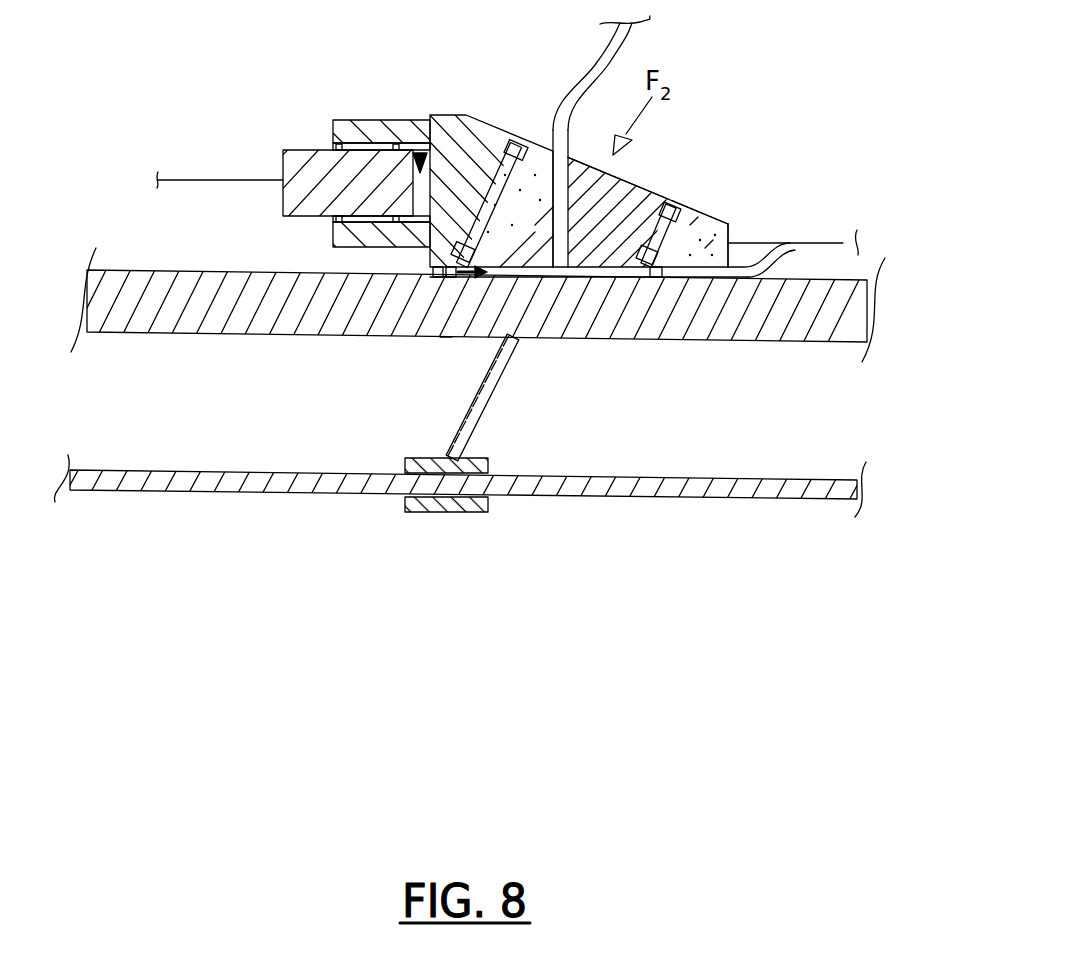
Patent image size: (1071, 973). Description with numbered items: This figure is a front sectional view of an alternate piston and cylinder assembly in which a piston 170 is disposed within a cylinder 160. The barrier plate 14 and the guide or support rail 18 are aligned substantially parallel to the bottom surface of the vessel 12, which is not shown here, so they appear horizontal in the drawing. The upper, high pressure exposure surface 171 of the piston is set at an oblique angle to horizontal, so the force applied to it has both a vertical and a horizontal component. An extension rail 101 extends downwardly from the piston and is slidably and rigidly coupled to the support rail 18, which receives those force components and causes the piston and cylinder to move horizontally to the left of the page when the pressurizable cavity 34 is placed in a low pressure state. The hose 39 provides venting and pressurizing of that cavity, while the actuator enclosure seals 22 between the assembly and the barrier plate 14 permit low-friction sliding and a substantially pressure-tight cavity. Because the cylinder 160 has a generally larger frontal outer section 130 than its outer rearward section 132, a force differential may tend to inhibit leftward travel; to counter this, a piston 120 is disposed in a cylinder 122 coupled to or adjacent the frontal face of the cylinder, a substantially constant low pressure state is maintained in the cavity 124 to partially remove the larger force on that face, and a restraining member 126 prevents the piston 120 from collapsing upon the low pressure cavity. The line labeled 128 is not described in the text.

The vessel 12 is at (380, 722).
The barrier plate 14 is at (735, 344).
The guide or support rail 18 is at (572, 499).
The actuator enclosure seals 22 is at (430, 270).
The pressurizable cavity 34 is at (438, 340).
The hose 39 is at (632, 42).
The extension rail 101 is at (503, 383).
The piston 120 is at (313, 150).
The cylinder 122 is at (372, 120).
The cavity 124 is at (420, 150).
The restraining member 126 is at (203, 180).
The reference line 128 is at (843, 242).
The frontal outer section 130 is at (435, 156).
The outer rearward section 132 is at (730, 232).
The cylinder 160 is at (705, 218).
The piston 170 is at (633, 184).
The upper high pressure exposure surface 171 is at (543, 150).